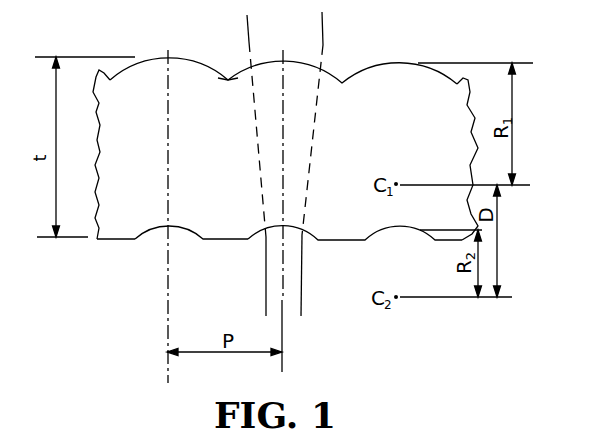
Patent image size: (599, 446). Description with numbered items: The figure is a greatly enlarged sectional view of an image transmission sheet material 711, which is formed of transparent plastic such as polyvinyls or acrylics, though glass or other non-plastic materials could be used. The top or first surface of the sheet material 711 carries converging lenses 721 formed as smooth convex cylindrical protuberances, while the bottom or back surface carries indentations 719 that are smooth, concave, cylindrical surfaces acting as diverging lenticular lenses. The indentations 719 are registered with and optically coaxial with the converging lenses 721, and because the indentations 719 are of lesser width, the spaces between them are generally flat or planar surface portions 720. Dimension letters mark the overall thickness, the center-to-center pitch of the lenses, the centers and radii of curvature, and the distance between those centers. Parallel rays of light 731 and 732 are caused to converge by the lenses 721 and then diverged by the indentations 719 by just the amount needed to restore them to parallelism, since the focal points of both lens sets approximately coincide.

The sheet material 711 is at (394, 56).
The indentations 719 is at (147, 240).
The flat or planar surface portions 720 is at (241, 242).
The converging lenses 721 is at (214, 68).
The parallel ray of light 731 is at (248, 32).
The parallel ray of light 732 is at (318, 22).